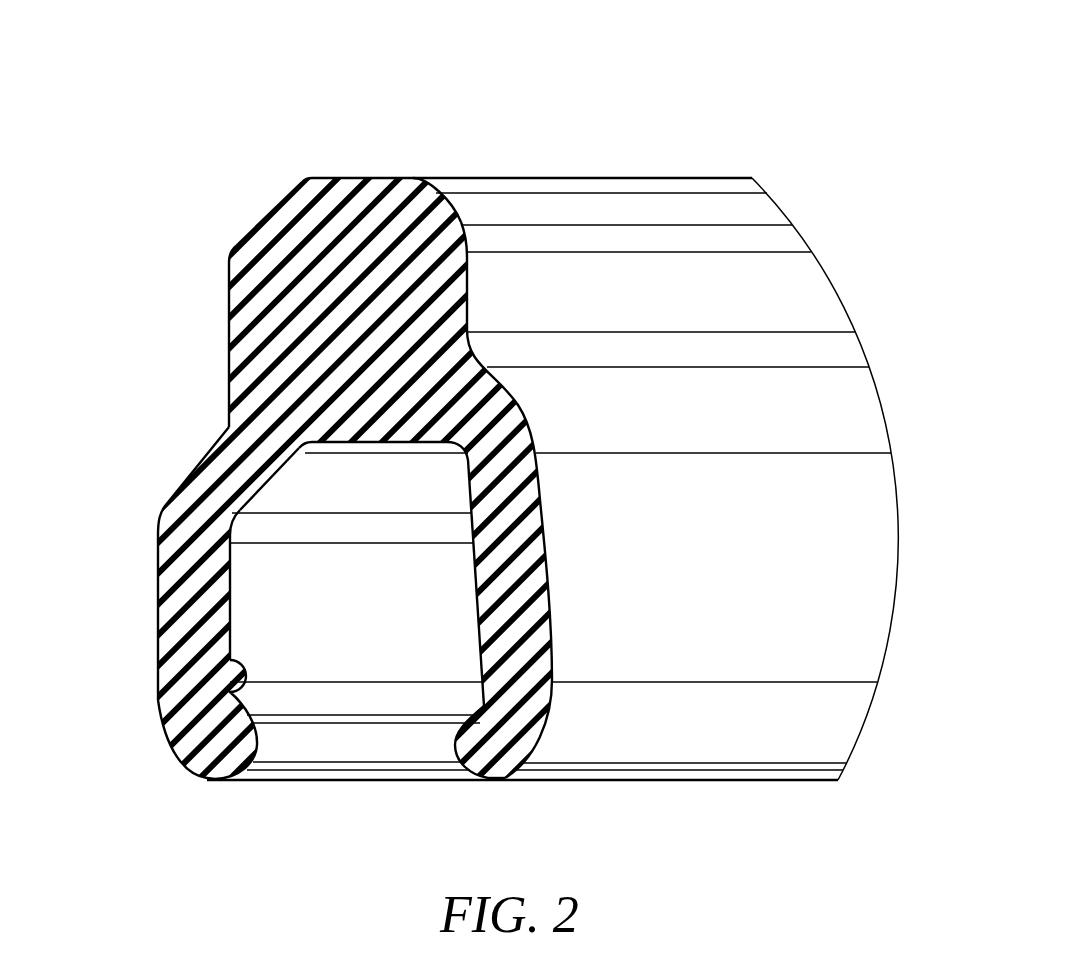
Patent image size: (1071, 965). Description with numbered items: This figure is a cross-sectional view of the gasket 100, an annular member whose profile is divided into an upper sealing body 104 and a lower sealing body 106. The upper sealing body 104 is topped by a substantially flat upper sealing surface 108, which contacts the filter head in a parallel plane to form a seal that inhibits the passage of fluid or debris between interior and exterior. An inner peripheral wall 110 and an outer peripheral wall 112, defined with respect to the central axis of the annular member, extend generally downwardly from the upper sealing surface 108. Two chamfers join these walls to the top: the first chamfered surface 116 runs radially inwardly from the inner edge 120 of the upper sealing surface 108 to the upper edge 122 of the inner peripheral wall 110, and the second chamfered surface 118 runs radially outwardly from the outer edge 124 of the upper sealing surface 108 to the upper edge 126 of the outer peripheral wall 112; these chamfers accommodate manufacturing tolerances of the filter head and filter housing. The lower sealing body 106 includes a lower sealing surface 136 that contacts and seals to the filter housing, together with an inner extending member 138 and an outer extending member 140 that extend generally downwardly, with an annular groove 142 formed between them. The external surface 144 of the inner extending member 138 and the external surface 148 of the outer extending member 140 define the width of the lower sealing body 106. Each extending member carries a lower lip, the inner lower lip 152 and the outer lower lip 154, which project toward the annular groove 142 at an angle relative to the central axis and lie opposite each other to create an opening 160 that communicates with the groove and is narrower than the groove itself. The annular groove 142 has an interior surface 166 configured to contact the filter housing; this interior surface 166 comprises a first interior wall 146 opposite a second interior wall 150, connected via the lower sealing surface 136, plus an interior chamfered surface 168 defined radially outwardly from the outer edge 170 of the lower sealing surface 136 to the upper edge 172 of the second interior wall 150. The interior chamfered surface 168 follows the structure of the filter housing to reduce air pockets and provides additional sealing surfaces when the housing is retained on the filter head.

The gasket 100 is at (874, 62).
The upper sealing body 104 is at (102, 222).
The lower sealing body 106 is at (126, 640).
The upper sealing surface 108 is at (360, 178).
The inner peripheral wall 110 is at (467, 283).
The outer peripheral wall 112 is at (230, 306).
The first chamfered surface 116 is at (455, 232).
The second chamfered surface 118 is at (256, 222).
The inner edge 120 is at (412, 172).
The upper edge 122 is at (455, 243).
The outer edge 124 is at (288, 171).
The upper edge 126 is at (239, 264).
The lower sealing surface 136 is at (380, 442).
The inner extending member 138 is at (536, 566).
The outer extending member 140 is at (167, 593).
The annular groove 142 is at (452, 702).
The external surface 144 is at (552, 597).
The first interior wall 146 is at (477, 623).
The external surface 148 is at (158, 688).
The second interior wall 150 is at (192, 752).
The inner lower lip 152 is at (504, 791).
The outer lower lip 154 is at (207, 792).
The opening 160 is at (297, 784).
The interior surface 166 is at (340, 702).
The interior chamfered surface 168 is at (255, 496).
The outer edge 170 is at (305, 440).
The upper edge 172 is at (231, 521).